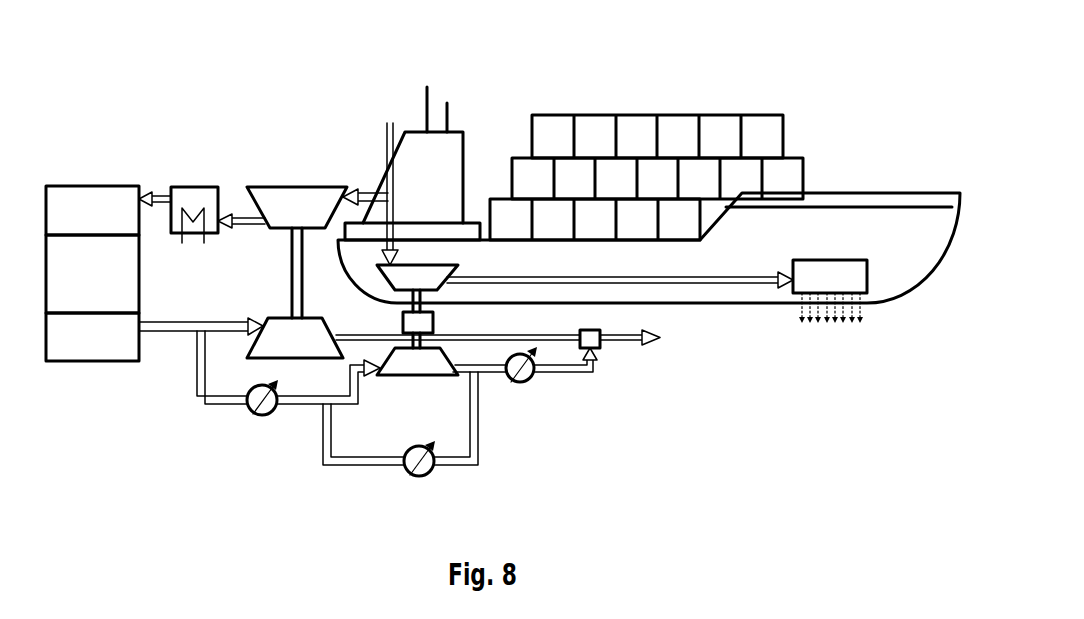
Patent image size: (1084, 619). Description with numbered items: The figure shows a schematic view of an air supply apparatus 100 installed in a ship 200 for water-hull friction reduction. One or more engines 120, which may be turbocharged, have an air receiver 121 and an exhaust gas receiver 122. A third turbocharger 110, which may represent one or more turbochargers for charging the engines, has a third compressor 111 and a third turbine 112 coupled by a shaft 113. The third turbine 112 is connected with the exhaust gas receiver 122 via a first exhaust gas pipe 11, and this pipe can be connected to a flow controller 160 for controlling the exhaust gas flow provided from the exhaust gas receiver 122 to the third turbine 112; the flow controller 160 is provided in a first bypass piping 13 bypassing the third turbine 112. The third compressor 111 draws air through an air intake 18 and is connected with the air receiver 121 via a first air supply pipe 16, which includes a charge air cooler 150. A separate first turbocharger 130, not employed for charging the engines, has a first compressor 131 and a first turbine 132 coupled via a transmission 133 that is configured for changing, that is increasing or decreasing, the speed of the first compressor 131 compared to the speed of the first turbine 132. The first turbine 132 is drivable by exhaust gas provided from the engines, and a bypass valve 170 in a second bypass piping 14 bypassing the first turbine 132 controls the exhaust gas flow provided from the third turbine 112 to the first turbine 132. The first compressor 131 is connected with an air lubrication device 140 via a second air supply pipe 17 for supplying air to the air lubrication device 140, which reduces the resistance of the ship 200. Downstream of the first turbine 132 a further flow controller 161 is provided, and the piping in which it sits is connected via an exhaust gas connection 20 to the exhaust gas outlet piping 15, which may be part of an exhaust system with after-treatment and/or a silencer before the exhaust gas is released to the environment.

The air supply apparatus 100 is at (419, 306).
The ship 200 is at (649, 164).
The third turbocharger 110 is at (286, 211).
The third compressor 111 is at (272, 190).
The third turbine 112 is at (283, 325).
The shaft 113 is at (291, 262).
The one or more engines 120 is at (92, 274).
The air receiver 121 is at (92, 210).
The exhaust gas receiver 122 is at (92, 337).
The first turbocharger 130 is at (433, 335).
The first compressor 131 is at (445, 266).
The first turbine 132 is at (399, 356).
The transmission 133 is at (434, 322).
The air lubrication device 140 is at (830, 291).
The charge air cooler 150 is at (172, 234).
The flow controller 160 is at (246, 420).
The further flow controller 161 is at (524, 388).
The bypass valve 170 is at (410, 478).
The first exhaust gas pipe 11 is at (170, 332).
The first bypass piping 13 is at (200, 395).
The second bypass piping 14 is at (323, 456).
The exhaust gas outlet piping 15 is at (549, 340).
The first air supply pipe 16 is at (162, 193).
The second air supply pipe 17 is at (693, 284).
The air intake 18 is at (386, 133).
The exhaust gas connection 20 is at (601, 347).